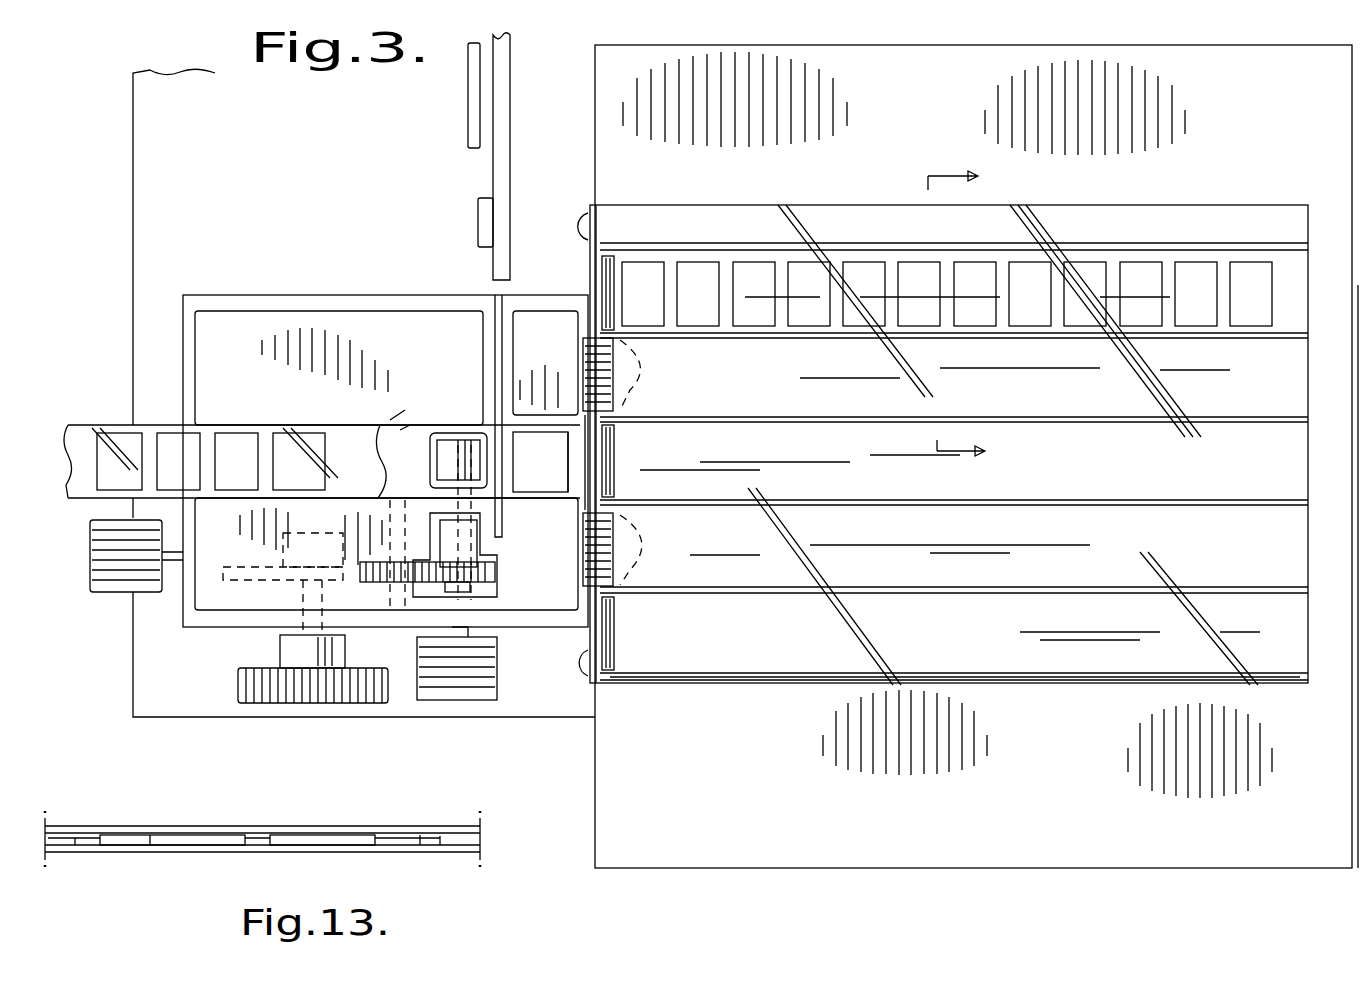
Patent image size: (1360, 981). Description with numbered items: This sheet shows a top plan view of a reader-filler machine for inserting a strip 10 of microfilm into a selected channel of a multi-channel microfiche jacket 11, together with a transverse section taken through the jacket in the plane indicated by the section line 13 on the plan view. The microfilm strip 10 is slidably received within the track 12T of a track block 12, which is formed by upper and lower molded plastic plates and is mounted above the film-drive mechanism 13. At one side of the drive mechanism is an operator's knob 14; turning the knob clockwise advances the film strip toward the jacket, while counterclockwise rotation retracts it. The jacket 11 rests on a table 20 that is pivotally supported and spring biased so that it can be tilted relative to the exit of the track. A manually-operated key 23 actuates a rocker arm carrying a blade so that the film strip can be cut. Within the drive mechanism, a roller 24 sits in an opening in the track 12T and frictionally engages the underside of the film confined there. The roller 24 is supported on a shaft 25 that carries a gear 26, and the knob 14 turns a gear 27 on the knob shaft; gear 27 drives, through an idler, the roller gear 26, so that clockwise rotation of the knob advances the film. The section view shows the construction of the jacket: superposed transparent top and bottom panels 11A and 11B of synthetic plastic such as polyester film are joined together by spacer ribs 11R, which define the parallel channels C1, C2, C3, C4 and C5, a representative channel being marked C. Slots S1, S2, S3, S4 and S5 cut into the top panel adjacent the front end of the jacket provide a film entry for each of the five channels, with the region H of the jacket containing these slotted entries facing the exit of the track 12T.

In FIG. 3, the strip of microfilm 10 is at (155, 420).
In FIG. 13, the strip of microfilm 10 is at (183, 843).
In FIG. 13, the multi-channel microfiche jacket 11 is at (383, 811).
In FIG. 3, the top panel 11A is at (1090, 655).
In FIG. 13, the top panel 11A is at (400, 825).
In FIG. 13, the bottom panel 11B is at (405, 840).
In FIG. 3, the spacer ribs 11R is at (985, 218).
In FIG. 13, the spacer ribs 11R is at (88, 845).
In FIG. 3, the track block 12 is at (282, 312).
In FIG. 3, the track 12T is at (313, 425).
In FIG. 3, the film-drive mechanism 13 is at (939, 313).
In FIG. 3, the operator's knob 14 is at (372, 705).
In FIG. 3, the table 20 is at (1262, 868).
In FIG. 3, the manually-operated key 23 is at (490, 700).
In FIG. 3, the roller 24 is at (452, 445).
In FIG. 3, the shaft 25 is at (482, 548).
In FIG. 3, the gear 26 is at (492, 574).
In FIG. 3, the gear 27 is at (255, 583).
In FIG. 13, the channel C is at (123, 835).
In FIG. 3, the first channel C1 is at (1298, 290).
In FIG. 3, the second channel C2 is at (1296, 396).
In FIG. 13, the second channel C2 is at (333, 838).
In FIG. 3, the third channel C3 is at (1296, 478).
In FIG. 3, the fourth channel C4 is at (1296, 556).
In FIG. 3, the fifth channel C5 is at (1290, 650).
In FIG. 3, the header H is at (1226, 214).
In FIG. 3, the first slot S1 is at (605, 644).
In FIG. 3, the second slot S2 is at (600, 528).
In FIG. 3, the third slot S3 is at (605, 470).
In FIG. 3, the fourth slot S4 is at (600, 395).
In FIG. 3, the fifth slot S5 is at (612, 262).